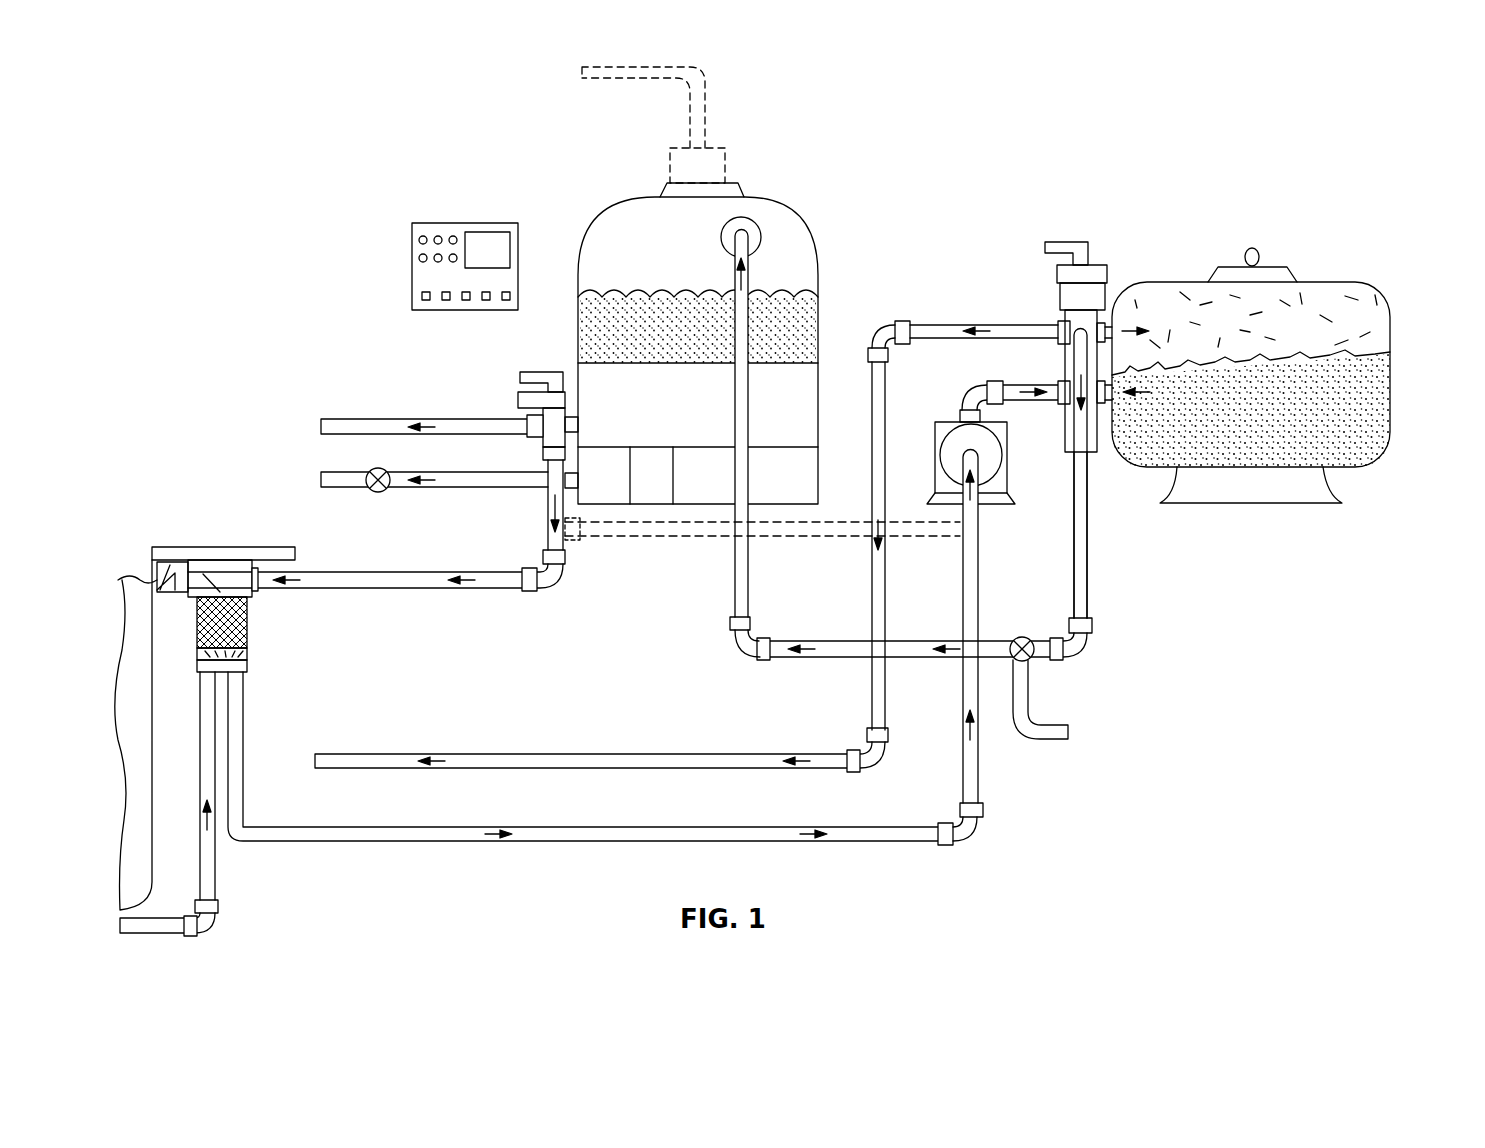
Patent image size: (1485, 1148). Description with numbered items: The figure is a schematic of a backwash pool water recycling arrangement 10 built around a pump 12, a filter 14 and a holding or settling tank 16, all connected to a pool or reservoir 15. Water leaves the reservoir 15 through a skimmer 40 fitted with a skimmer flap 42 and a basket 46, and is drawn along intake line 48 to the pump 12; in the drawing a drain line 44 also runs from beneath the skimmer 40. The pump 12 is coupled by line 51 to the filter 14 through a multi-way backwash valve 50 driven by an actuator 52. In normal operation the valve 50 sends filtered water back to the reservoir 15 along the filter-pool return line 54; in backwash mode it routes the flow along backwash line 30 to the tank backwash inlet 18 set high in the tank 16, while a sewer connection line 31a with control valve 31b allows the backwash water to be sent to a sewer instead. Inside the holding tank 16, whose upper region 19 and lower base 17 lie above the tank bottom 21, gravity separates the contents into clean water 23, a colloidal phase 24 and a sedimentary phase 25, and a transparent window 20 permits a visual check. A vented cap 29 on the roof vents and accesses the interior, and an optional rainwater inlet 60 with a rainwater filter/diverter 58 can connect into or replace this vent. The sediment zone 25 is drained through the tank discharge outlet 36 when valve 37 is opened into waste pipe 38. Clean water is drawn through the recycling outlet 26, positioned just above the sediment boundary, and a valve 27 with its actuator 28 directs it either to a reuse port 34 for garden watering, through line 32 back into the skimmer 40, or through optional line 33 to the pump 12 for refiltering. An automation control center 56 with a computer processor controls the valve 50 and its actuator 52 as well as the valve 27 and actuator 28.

The pool filter water recycling arrangement 10 is at (1356, 140).
The pump 12 is at (1006, 482).
The filter 14 is at (1349, 250).
The reservoir 15 is at (152, 818).
The holding tank 16 is at (716, 342).
The base 17 is at (821, 413).
The tank backwash inlet 18 is at (746, 218).
The upper chamber 19 is at (590, 232).
The transparent window 20 is at (649, 475).
The bottom 21 is at (784, 507).
The clean water 23 is at (698, 330).
The colloidal phase 24 is at (698, 419).
The sedimentary phase 25 is at (698, 475).
The recycling outlet 26 is at (571, 410).
The valve 27 is at (557, 428).
The actuator 28 is at (498, 409).
The vented cap 29 is at (732, 183).
The backwash line 30 is at (1088, 528).
The sewer connection line 31a is at (1049, 742).
The control valve 31b is at (1030, 640).
The line 32 is at (548, 535).
The optional line 33 is at (651, 540).
The reuse port 34 is at (343, 419).
The tank discharge outlet 36 is at (565, 548).
The valve 37 is at (375, 493).
The waste pipe 38 is at (405, 482).
The skimmer 40 is at (204, 569).
The skimmer flap 42 is at (163, 548).
The skimmer drain pipe 44 is at (215, 872).
The basket 46 is at (240, 625).
The intake line 48 is at (575, 843).
The multi-way valve 50 is at (1015, 484).
The line 51 is at (1040, 384).
The actuator 52 is at (1104, 268).
The filter-pool return line 54 is at (625, 770).
The automation control center 56 is at (458, 222).
The rainwater filter/diverter 58 is at (665, 150).
The rainwater inlet 60 is at (583, 80).